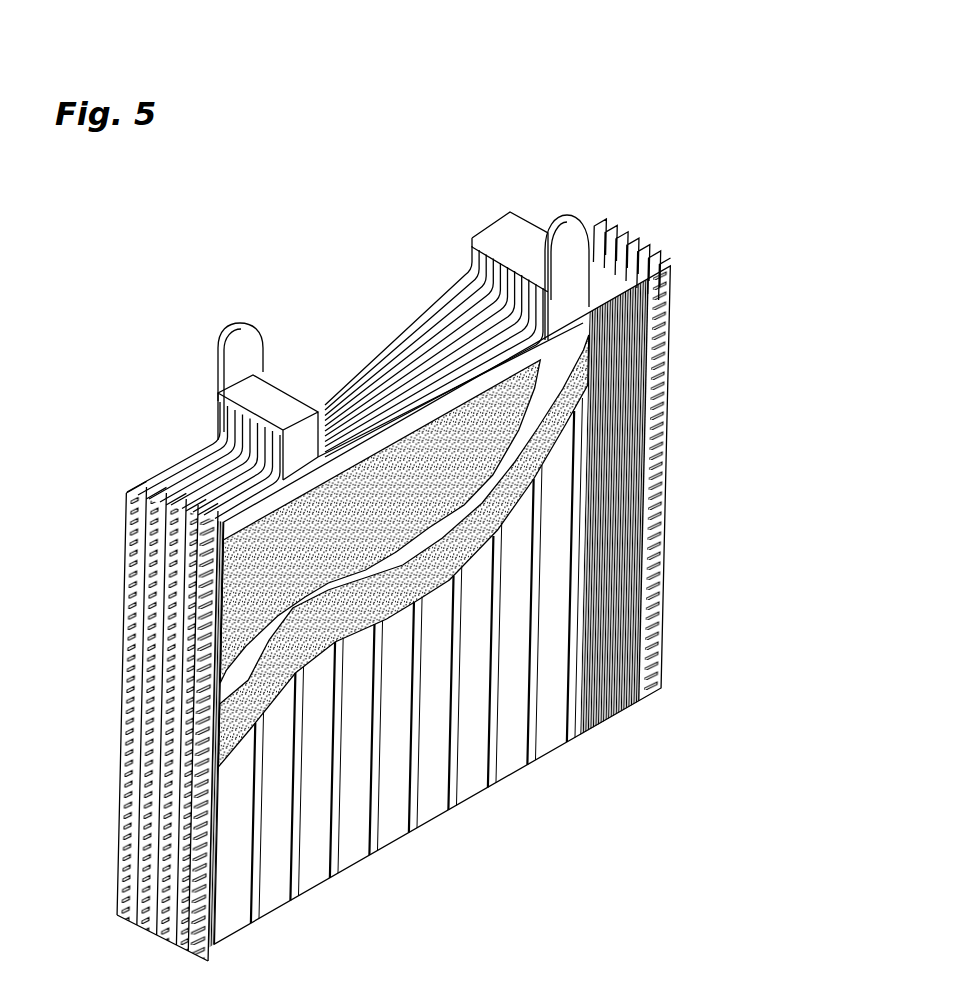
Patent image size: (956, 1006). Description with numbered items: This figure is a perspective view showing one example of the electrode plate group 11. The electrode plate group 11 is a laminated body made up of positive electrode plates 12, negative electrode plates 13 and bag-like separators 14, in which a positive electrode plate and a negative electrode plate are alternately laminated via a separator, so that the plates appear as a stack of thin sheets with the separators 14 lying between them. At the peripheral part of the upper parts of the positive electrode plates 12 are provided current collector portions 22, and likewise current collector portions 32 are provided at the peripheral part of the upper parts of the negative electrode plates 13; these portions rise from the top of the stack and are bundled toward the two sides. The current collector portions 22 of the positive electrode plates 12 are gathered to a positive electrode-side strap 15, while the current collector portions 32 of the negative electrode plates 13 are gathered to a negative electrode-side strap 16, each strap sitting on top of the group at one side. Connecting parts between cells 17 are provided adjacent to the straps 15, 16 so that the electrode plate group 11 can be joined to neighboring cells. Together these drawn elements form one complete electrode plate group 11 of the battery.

The electrode plate group 11 is at (368, 260).
The positive electrode plates 12 is at (303, 497).
The negative electrode plates 13 is at (472, 240).
The bag-like separators 14 is at (453, 463).
The positive electrode-side strap 15 is at (277, 390).
The negative electrode-side strap 16 is at (528, 236).
The connecting parts between cells 17 is at (247, 335).
The current collector portions 22 is at (215, 437).
The current collector portions 32 is at (470, 276).